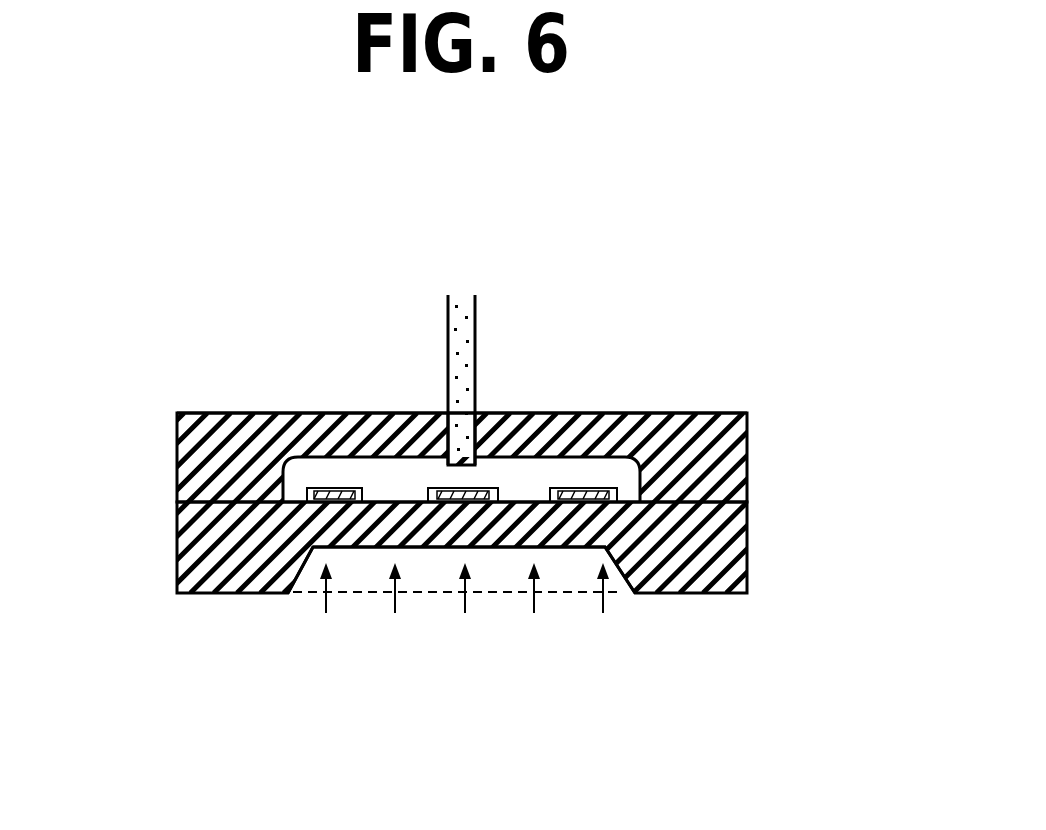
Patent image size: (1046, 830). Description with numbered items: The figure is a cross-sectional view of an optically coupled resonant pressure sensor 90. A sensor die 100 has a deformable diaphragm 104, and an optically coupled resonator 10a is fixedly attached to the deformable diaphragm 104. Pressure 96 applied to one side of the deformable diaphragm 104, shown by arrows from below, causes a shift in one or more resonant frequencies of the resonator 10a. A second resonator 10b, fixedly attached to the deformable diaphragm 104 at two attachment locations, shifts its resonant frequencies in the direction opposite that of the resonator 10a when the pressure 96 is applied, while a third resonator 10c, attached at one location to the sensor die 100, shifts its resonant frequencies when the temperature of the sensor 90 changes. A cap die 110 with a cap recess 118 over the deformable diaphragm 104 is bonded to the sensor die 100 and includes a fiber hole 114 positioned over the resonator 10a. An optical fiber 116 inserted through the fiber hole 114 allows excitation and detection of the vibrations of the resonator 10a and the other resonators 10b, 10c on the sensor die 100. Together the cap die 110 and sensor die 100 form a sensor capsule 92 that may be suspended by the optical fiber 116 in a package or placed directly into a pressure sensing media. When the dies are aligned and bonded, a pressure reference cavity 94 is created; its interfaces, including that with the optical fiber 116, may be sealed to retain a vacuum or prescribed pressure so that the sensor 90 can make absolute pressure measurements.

The optically coupled resonant pressure sensor 90 is at (259, 247).
The sensor capsule 92 is at (227, 413).
The pressure reference cavity 94 is at (307, 470).
The pressure 96 is at (465, 598).
The sensor die 100 is at (747, 533).
The deformable diaphragm 104 is at (630, 590).
The cap die 110 is at (747, 471).
The fiber hole 114 is at (477, 427).
The optical fiber 116 is at (475, 325).
The cap recess 118 is at (615, 472).
The optically coupled resonator 10a is at (440, 488).
The second resonator 10b is at (583, 488).
The third resonator 10c is at (337, 488).